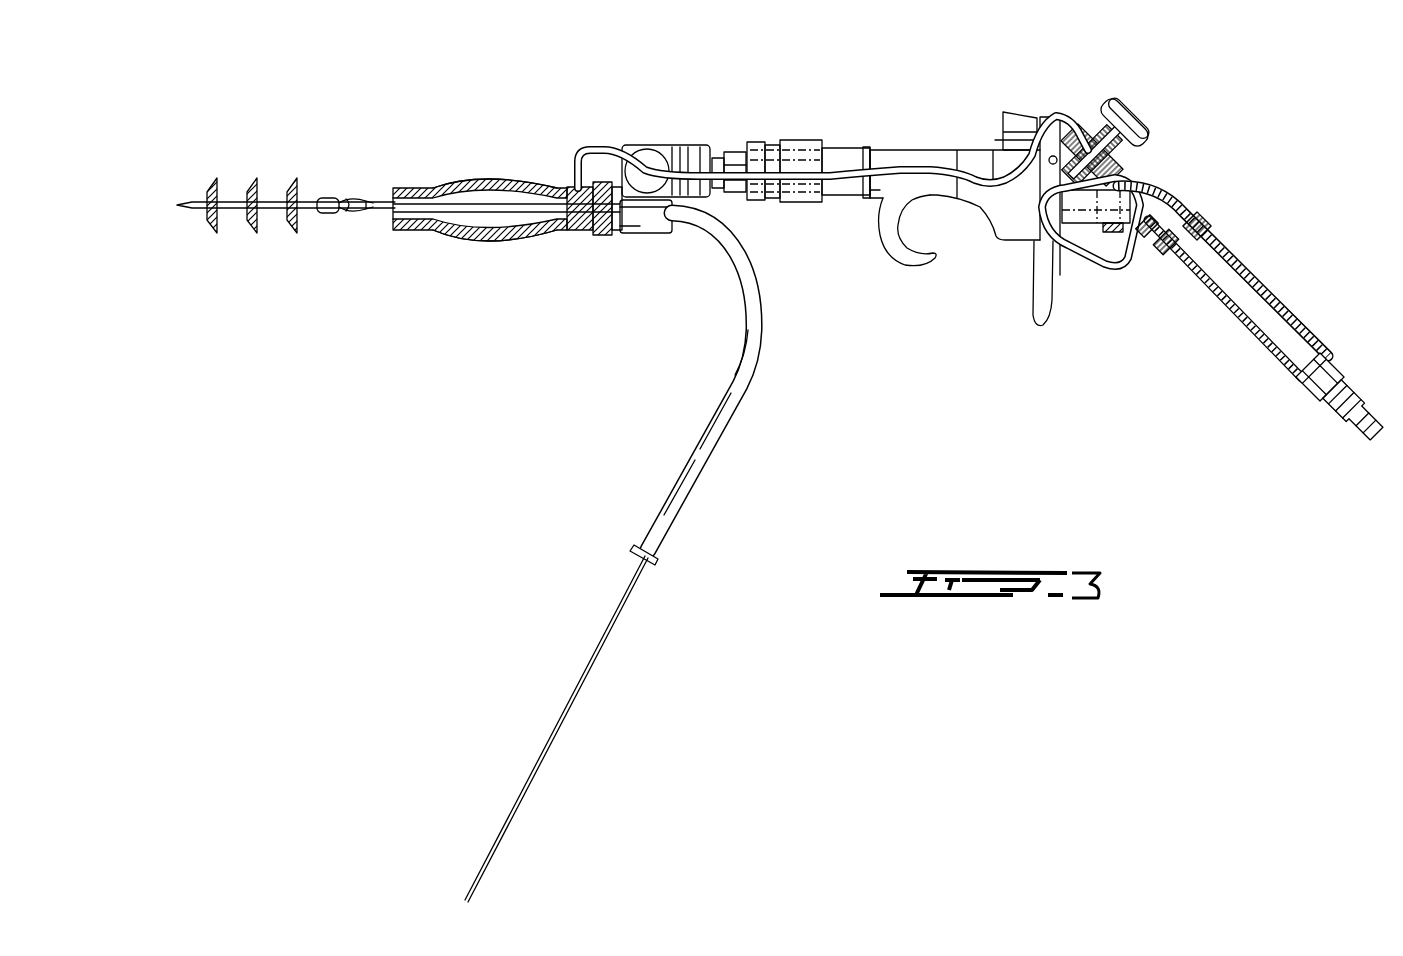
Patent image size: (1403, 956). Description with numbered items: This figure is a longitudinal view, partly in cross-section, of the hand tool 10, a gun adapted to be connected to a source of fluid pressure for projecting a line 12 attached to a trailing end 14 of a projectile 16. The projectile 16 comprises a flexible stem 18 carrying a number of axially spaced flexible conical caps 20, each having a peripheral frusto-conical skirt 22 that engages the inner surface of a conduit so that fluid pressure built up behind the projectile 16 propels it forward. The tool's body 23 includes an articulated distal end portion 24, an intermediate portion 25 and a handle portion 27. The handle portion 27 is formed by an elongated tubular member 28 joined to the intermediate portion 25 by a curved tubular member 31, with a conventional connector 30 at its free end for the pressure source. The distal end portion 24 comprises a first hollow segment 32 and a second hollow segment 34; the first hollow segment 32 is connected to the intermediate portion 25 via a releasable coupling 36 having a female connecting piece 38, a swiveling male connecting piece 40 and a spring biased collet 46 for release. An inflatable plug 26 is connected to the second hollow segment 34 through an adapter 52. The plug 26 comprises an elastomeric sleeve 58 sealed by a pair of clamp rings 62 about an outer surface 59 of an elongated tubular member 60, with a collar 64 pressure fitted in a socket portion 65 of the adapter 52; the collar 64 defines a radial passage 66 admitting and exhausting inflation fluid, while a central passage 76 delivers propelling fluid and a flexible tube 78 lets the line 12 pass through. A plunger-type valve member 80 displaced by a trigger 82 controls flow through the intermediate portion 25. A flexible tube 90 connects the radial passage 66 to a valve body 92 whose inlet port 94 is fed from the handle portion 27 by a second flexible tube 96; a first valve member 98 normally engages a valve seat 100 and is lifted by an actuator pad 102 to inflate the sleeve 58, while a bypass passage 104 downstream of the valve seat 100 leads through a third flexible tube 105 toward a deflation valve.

The hand tool 10 is at (1106, 382).
The line 12 is at (583, 677).
The trailing end 14 is at (332, 198).
The projectile 16 is at (237, 188).
The flexible stem 18 is at (277, 212).
The flexible conical caps 20 is at (207, 183).
The frusto-conical skirt 22 is at (251, 226).
The body 23 is at (833, 127).
The articulated distal end portion 24 is at (675, 200).
The intermediate portion 25 is at (965, 211).
The inflatable plug 26 is at (495, 190).
The handle portion 27 is at (1253, 311).
The elongated tubular member 28 is at (1263, 342).
The connector 30 is at (1330, 400).
The curved tubular member 31 is at (1173, 195).
The first hollow segment 32 is at (677, 153).
The second hollow segment 34 is at (650, 224).
The releasable coupling 36 is at (808, 166).
The female connecting piece 38 is at (860, 150).
The male connecting piece 40 is at (714, 150).
The spring biased collet 46 is at (805, 192).
The adapter 52 is at (623, 232).
The elastomeric sleeve 58 is at (433, 188).
The outer surface 59 is at (480, 235).
The elongated tubular member 60 is at (496, 207).
The clamp rings 62 is at (410, 189).
The collar 64 is at (587, 236).
The socket portion 65 is at (609, 232).
The radial passage 66 is at (570, 187).
The central passage 76 is at (430, 218).
The flexible tube 78 is at (740, 386).
The valve member 80 is at (1010, 140).
The trigger 82 is at (1040, 287).
The flexible tube 90 is at (583, 157).
The valve body 92 is at (1143, 127).
The inlet port 94 is at (1040, 182).
The second flexible tube 96 is at (1120, 270).
The first valve member 98 is at (1127, 118).
The valve seat 100 is at (1097, 262).
The actuator pad 102 is at (1123, 107).
The bypass passage 104 is at (1140, 167).
The third flexible tube 105 is at (1153, 217).